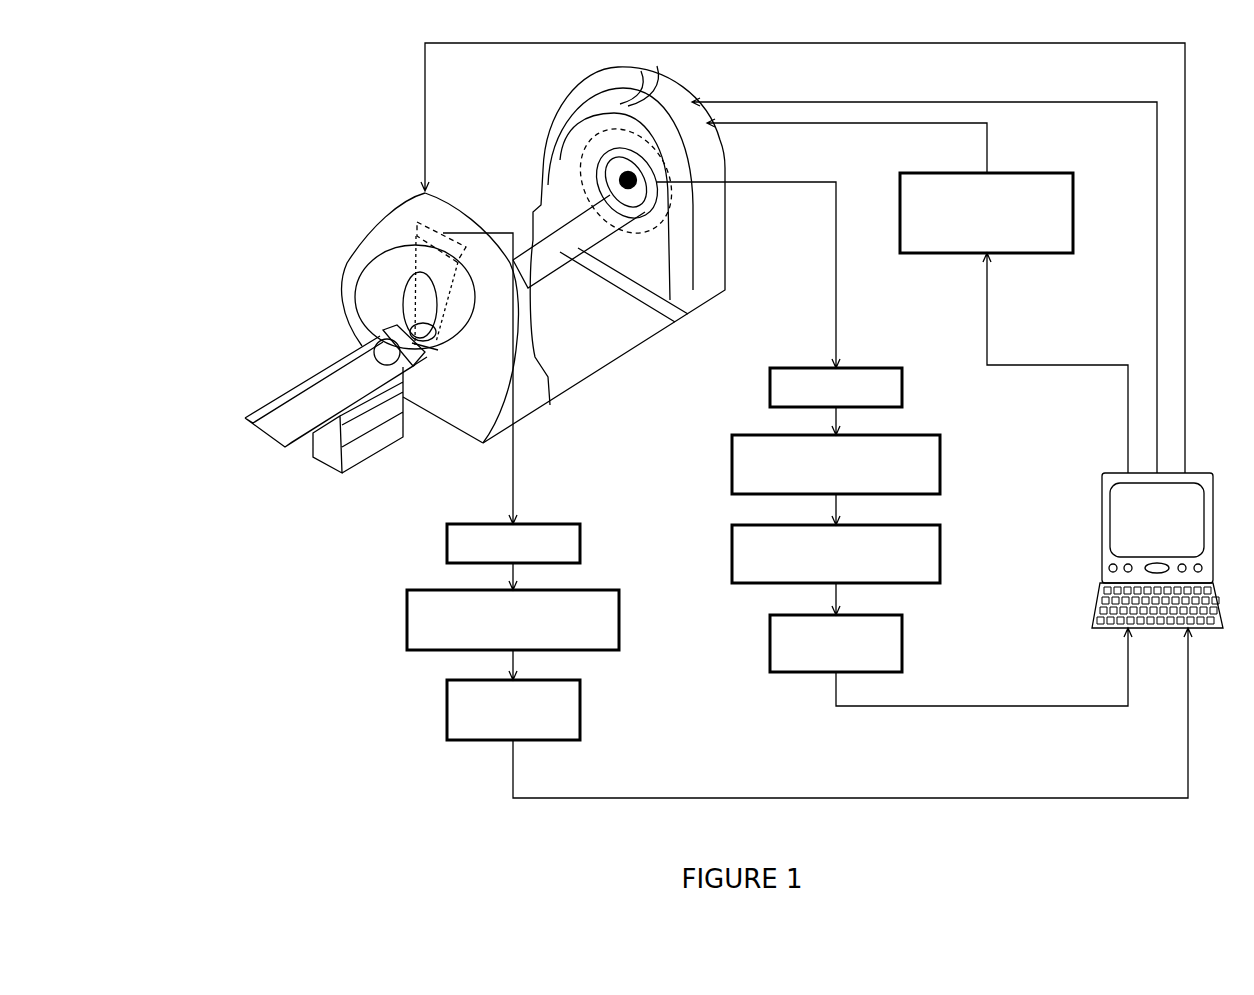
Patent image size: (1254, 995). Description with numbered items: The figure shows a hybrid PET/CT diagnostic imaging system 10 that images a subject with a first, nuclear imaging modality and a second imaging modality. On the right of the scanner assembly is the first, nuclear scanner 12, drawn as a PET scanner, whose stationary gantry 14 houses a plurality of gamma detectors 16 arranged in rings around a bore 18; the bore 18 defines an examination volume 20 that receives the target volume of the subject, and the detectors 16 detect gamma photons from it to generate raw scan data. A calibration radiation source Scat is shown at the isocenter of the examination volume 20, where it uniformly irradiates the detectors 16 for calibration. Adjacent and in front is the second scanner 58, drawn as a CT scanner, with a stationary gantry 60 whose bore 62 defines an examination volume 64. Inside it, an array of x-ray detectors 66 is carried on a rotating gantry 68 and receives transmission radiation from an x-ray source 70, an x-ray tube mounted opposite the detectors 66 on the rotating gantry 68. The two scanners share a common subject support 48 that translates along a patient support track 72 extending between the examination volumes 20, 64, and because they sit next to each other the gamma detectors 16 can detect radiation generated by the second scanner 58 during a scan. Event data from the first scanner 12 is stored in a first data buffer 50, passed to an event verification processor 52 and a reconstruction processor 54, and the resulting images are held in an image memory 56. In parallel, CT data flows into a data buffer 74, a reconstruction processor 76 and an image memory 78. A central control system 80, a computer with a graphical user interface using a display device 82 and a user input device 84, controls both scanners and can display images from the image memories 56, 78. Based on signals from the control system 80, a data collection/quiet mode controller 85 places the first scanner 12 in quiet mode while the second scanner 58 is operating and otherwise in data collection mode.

The diagnostic imaging system 10 is at (228, 120).
The first nuclear scanner 12 is at (538, 82).
The stationary gantry 14 is at (602, 82).
The gamma detectors 16 is at (661, 92).
The bore 18 is at (592, 172).
The examination volume 20 is at (620, 187).
The calibration radiation source Scat is at (623, 190).
The subject support 48 is at (308, 382).
The first data buffer 50 is at (776, 369).
The event verification processor 52 is at (731, 436).
The reconstruction processor 54 is at (731, 526).
The image memory 56 is at (776, 615).
The second scanner 58 is at (346, 188).
The stationary gantry 60 is at (405, 202).
The bore 62 is at (400, 288).
The examination volume 64 is at (404, 304).
The x-ray detectors 66 is at (436, 214).
The rotating gantry 68 is at (383, 317).
The x-ray source 70 is at (427, 340).
The patient support track 72 is at (532, 238).
The data buffer 74 is at (449, 526).
The reconstruction processor 76 is at (414, 592).
The image memory 78 is at (449, 681).
The central control system 80 is at (1071, 449).
The display device 82 is at (1117, 525).
The user input device 84 is at (1101, 594).
The data collection/quiet mode controller 85 is at (908, 172).